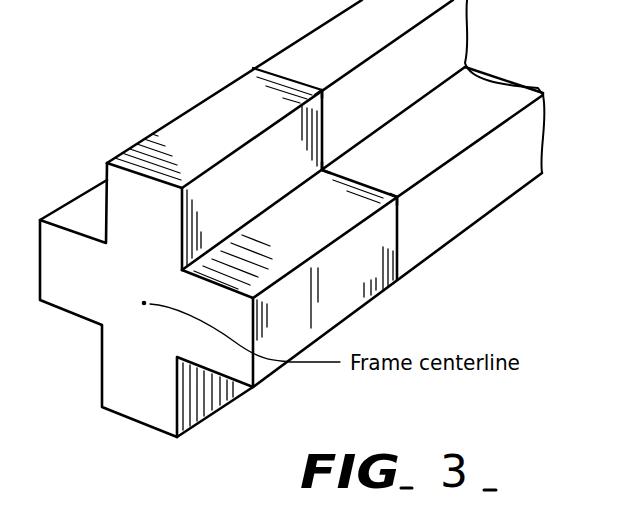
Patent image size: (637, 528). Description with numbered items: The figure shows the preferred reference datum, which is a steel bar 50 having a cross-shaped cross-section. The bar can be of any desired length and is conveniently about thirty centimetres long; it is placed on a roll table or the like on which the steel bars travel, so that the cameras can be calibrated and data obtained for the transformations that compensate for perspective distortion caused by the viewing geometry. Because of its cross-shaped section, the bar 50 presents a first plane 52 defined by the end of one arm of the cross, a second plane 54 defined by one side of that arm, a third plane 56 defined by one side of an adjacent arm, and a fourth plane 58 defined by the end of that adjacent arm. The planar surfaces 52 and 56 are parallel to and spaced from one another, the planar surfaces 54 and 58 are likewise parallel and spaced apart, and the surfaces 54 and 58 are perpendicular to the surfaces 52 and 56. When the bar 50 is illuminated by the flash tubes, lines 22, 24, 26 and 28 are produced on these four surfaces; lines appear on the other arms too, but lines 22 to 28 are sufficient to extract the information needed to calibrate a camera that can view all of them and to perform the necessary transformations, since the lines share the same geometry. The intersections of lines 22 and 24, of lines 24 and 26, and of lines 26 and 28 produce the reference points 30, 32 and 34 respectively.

The line 22 is at (281, 72).
The line 24 is at (323, 107).
The line 26 is at (370, 180).
The line 28 is at (397, 252).
The reference point 30 is at (322, 88).
The reference point 32 is at (322, 168).
The reference point 34 is at (399, 197).
The steel bar 50 is at (145, 126).
The first plane 52 is at (222, 140).
The second plane 54 is at (270, 190).
The third plane 56 is at (307, 237).
The fourth plane 58 is at (350, 290).